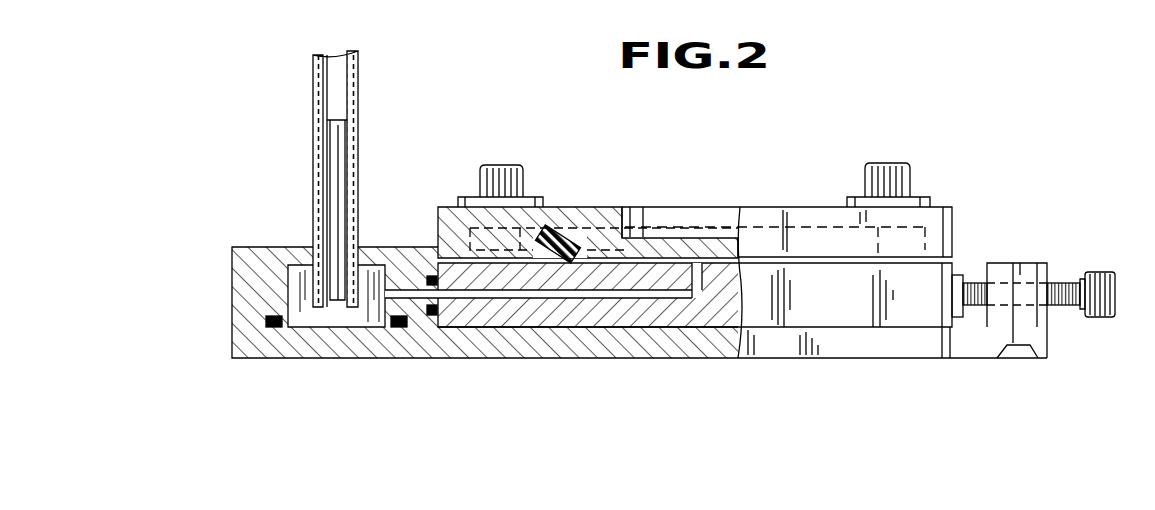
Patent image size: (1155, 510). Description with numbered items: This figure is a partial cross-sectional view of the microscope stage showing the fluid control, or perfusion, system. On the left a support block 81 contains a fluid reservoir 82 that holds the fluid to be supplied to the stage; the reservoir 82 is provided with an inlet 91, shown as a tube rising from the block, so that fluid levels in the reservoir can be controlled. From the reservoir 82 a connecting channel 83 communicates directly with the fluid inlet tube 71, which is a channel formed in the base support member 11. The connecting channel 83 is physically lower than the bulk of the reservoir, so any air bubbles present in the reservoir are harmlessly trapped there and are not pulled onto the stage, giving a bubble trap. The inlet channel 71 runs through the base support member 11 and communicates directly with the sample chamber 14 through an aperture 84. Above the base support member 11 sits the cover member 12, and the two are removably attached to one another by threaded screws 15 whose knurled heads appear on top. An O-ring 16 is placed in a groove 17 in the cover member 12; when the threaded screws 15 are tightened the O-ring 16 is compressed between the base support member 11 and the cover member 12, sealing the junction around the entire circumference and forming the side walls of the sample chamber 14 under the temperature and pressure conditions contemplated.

The base support member 11 is at (573, 307).
The cover member 12 is at (951, 207).
The sample chamber 14 is at (661, 262).
The threaded screws 15 is at (497, 165).
The O-ring 16 is at (587, 228).
The groove 17 is at (556, 228).
The fluid inlet tube 71 is at (647, 298).
The support block 81 is at (281, 247).
The fluid reservoir 82 is at (347, 317).
The connecting channel 83 is at (424, 308).
The aperture 84 is at (696, 292).
The inlet 91 is at (354, 137).